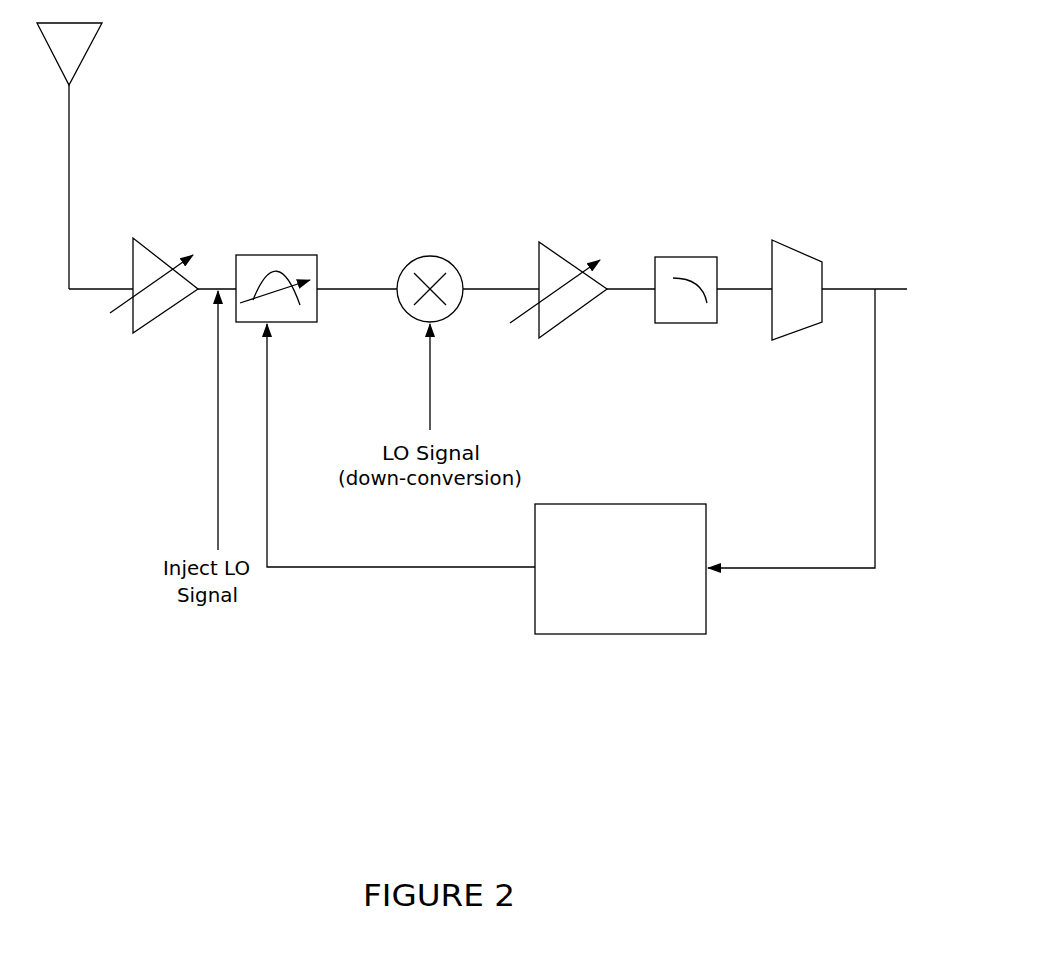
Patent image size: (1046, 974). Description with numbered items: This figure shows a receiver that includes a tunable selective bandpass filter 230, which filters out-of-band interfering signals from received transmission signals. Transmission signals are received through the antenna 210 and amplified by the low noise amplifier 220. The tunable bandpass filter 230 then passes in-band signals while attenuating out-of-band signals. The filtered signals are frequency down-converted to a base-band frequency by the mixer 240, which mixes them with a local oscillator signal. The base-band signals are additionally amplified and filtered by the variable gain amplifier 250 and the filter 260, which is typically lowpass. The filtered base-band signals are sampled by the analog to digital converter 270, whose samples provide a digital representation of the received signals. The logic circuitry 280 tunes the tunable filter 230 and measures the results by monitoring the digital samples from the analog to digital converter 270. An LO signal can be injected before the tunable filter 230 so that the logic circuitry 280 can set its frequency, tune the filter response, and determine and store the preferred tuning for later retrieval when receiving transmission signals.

The antenna 210 is at (86, 49).
The low noise amplifier 220 is at (150, 253).
The tunable selective bandpass filter 230 is at (265, 263).
The mixer 240 is at (425, 257).
The variable gain amplifier 250 is at (562, 270).
The filter 260 is at (688, 265).
The analog to digital converter 270 is at (802, 267).
The logic circuitry 280 is at (626, 617).